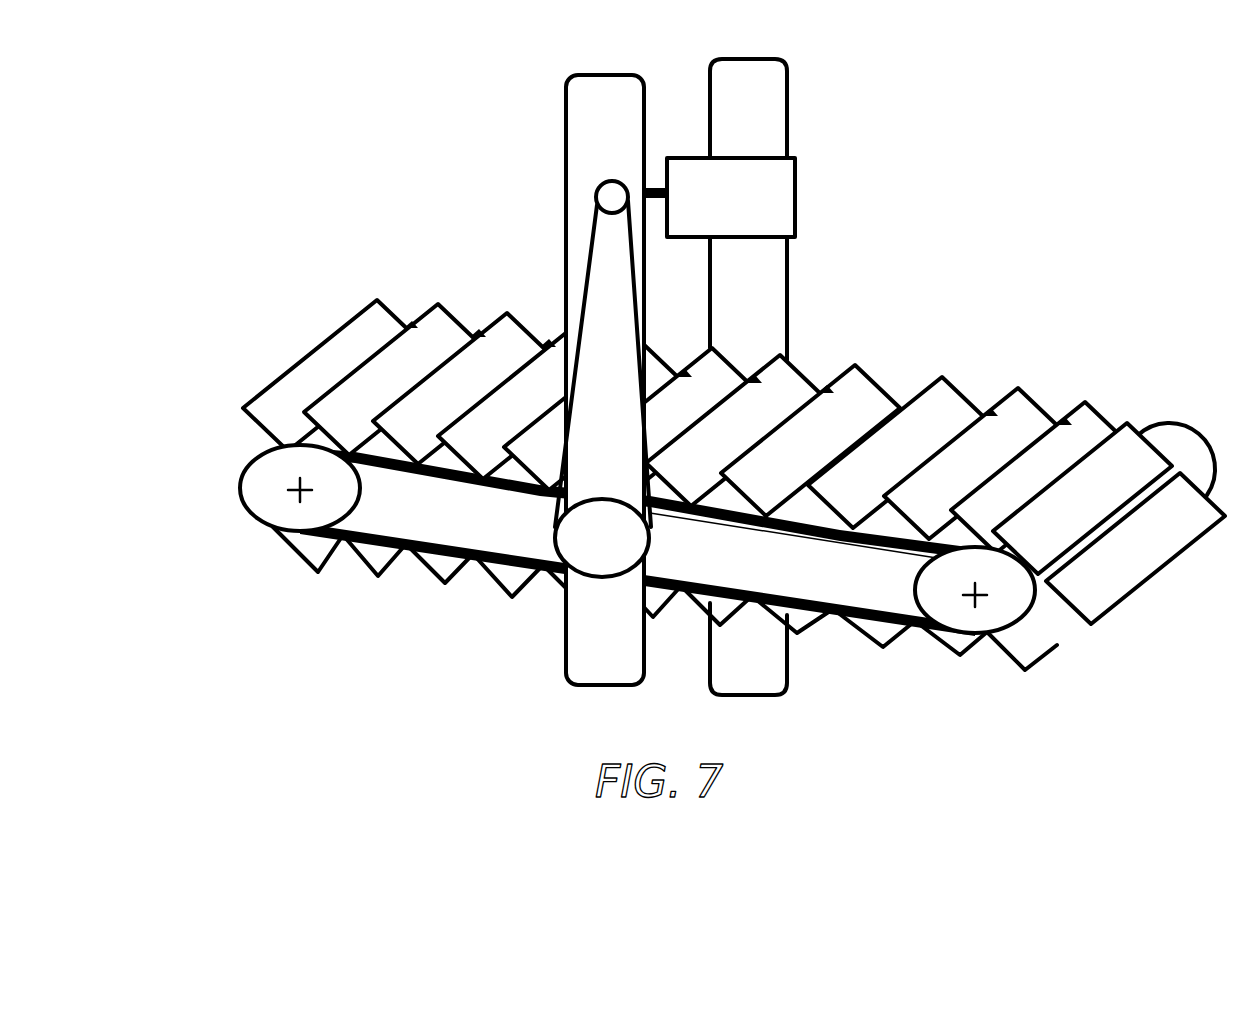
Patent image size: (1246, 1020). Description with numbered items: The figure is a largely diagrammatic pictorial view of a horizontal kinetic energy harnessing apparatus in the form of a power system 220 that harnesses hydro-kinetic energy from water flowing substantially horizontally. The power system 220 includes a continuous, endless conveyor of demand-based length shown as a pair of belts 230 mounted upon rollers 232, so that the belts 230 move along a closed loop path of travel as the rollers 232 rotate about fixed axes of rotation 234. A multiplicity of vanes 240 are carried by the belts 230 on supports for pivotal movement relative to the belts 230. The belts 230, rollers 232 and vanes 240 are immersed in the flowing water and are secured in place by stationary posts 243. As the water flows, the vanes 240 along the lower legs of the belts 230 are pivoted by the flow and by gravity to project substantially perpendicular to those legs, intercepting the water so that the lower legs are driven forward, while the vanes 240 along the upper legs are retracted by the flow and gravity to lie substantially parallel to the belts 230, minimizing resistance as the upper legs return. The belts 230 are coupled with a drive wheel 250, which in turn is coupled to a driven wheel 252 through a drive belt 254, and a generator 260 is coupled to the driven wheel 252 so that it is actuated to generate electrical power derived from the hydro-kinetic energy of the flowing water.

The power system 220 is at (401, 262).
The belts 230 is at (822, 388).
The rollers 232 is at (243, 498).
The fixed axes of rotation 234 is at (297, 492).
The vanes 240 is at (955, 407).
The stationary posts 243 is at (773, 272).
The drive wheel 250 is at (583, 549).
The driven wheel 252 is at (610, 197).
The drive belt 254 is at (586, 252).
The generator 260 is at (780, 182).